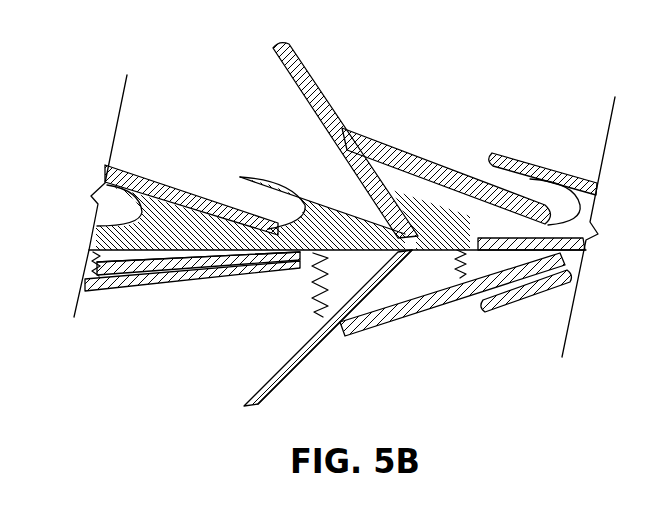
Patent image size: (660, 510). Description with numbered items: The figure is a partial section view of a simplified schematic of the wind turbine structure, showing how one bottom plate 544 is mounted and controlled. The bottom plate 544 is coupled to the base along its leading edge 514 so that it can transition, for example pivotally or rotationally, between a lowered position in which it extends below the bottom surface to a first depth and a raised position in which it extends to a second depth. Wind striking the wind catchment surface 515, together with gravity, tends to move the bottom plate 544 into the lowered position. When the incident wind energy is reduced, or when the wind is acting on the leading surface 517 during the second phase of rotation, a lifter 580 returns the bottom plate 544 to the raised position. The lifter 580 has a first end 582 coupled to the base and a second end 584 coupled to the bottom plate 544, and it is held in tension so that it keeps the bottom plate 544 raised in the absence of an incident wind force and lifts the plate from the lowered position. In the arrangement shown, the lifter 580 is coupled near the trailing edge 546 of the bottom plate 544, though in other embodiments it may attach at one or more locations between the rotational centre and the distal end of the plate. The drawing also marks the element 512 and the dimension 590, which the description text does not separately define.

The arm 512 is at (288, 80).
The leading edge 514 is at (397, 222).
The wind catchment surface 515 is at (322, 138).
The leading surface 517 is at (322, 343).
The bottom plate 544 is at (300, 353).
The trailing edge 546 is at (243, 400).
The lifter 580 is at (322, 281).
The first end 582 is at (302, 260).
The second end 584 is at (321, 317).
The offset distance 590 is at (558, 266).